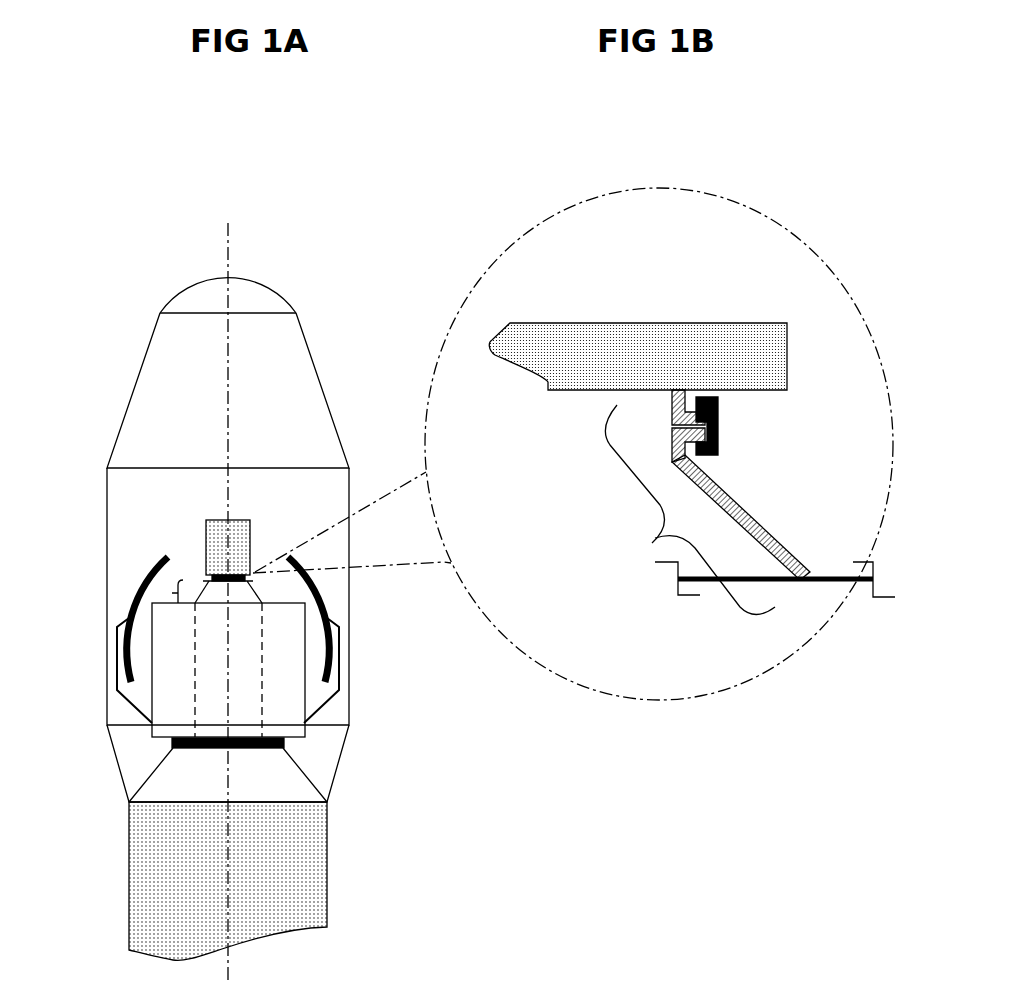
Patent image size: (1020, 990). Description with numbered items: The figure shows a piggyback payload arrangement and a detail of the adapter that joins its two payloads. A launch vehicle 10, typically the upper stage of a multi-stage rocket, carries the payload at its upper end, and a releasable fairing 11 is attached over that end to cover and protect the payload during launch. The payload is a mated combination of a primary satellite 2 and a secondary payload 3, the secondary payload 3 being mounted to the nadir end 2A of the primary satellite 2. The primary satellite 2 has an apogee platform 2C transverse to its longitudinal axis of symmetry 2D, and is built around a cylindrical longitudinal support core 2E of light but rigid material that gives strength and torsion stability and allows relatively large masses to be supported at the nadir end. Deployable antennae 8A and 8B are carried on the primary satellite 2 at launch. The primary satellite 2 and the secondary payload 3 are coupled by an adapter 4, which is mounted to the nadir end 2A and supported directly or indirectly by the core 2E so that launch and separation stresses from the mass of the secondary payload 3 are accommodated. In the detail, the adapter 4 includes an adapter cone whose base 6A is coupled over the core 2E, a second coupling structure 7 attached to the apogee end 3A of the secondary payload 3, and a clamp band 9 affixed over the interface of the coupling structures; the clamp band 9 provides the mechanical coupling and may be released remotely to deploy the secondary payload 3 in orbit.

In FIG. 1A, the primary satellite 2 is at (177, 698).
In FIG. 1A, the nadir end 2A is at (296, 595).
In FIG. 1A, the apogee platform 2C is at (299, 744).
In FIG. 1A, the longitudinal axis of symmetry 2D is at (231, 242).
In FIG. 1A, the core 2E is at (268, 652).
In FIG. 1A, the secondary payload 3 is at (238, 543).
In FIG. 1B, the apogee end 3A is at (590, 345).
In FIG. 1A, the adapter 4 is at (168, 588).
In FIG. 1B, the adapter 4 is at (690, 510).
In FIG. 1A, the base of the cone 6A is at (205, 586).
In FIG. 1B, the base of the cone 6A is at (759, 520).
In FIG. 1B, the second coupling structure 7 is at (668, 413).
In FIG. 1A, the deployable antenna 8A is at (124, 615).
In FIG. 1A, the deployable antenna 8B is at (332, 602).
In FIG. 1B, the clamp band 9 is at (723, 423).
In FIG. 1A, the launch vehicle 10 is at (123, 900).
In FIG. 1A, the releasable fairing 11 is at (323, 372).